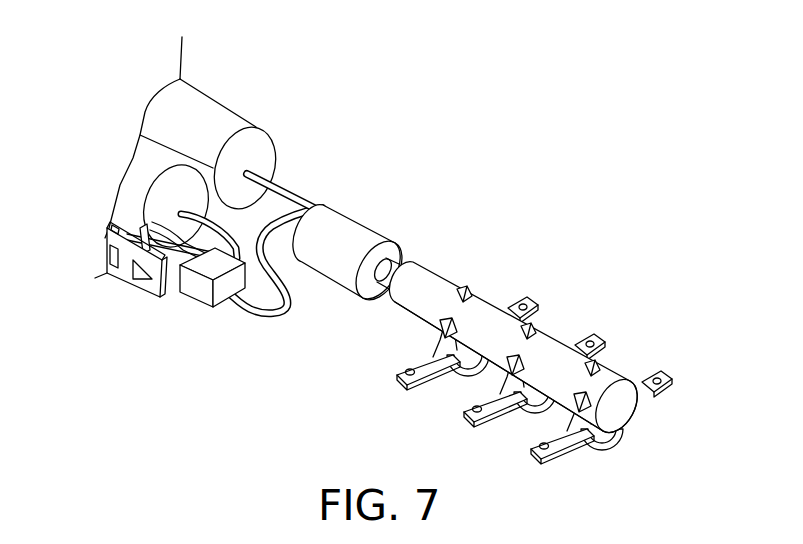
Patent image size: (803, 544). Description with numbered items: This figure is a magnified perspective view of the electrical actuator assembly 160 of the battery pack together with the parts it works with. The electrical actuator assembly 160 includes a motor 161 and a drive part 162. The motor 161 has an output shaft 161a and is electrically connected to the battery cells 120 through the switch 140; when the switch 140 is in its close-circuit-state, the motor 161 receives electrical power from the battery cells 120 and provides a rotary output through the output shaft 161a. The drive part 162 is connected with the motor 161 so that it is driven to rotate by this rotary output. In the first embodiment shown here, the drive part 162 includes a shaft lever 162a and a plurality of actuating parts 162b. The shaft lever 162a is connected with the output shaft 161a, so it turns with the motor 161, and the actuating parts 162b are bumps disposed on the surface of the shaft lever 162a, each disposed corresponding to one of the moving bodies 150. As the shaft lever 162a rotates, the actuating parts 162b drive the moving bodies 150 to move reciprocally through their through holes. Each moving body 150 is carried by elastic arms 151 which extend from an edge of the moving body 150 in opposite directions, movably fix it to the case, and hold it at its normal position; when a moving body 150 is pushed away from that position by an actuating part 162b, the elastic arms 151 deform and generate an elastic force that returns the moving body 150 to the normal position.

The battery cells 120 is at (229, 90).
The switch 140 is at (148, 314).
The moving body 150 is at (462, 373).
The elastic arm 151 is at (430, 357).
The electrical actuator assembly 160 is at (518, 337).
The motor 161 is at (357, 235).
The output shaft 161a is at (383, 274).
The drive part 162 is at (565, 328).
The shaft lever 162a is at (411, 310).
The actuating part 162b is at (462, 288).